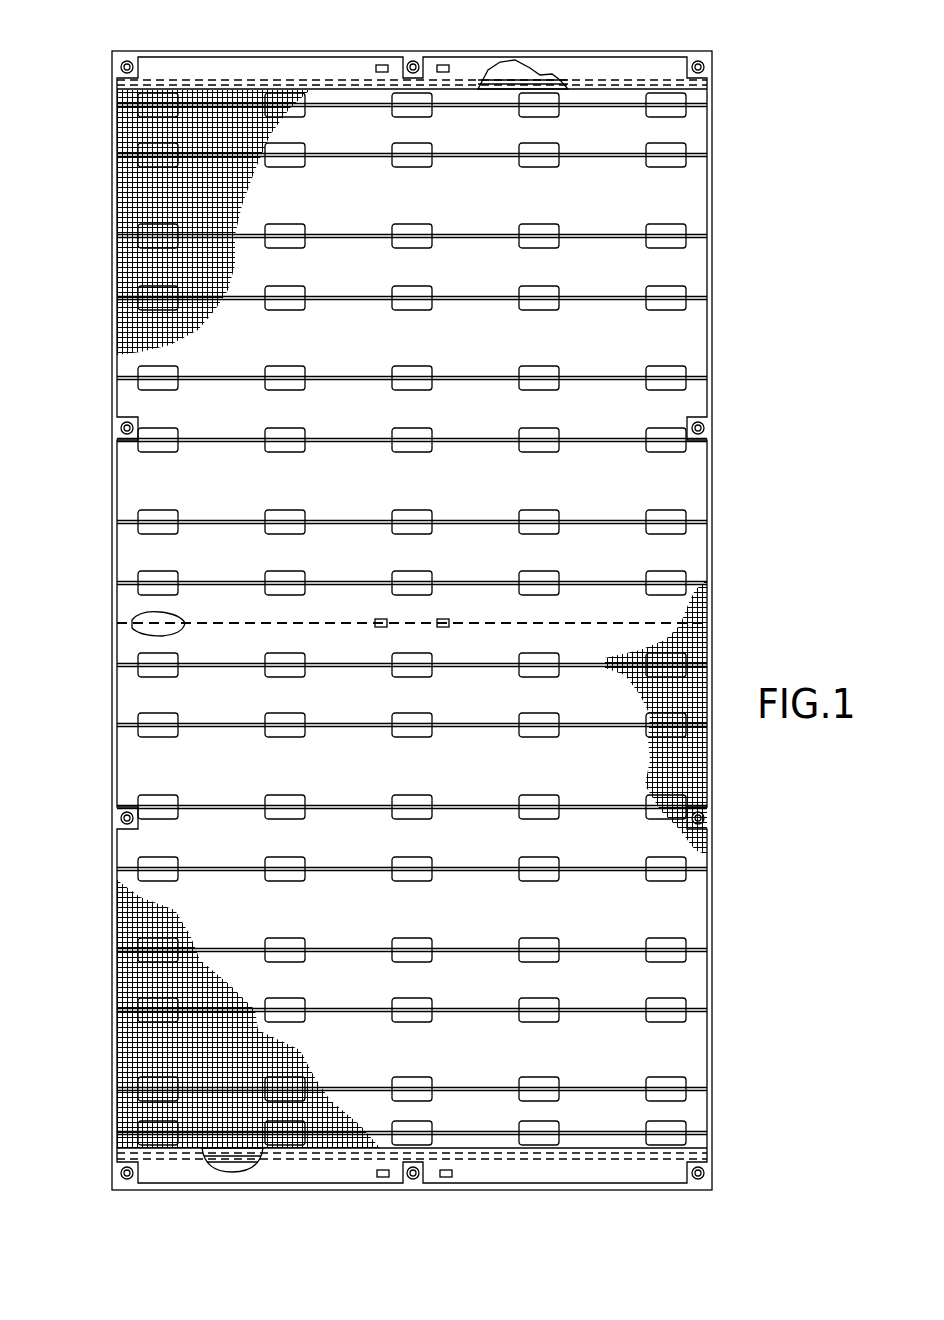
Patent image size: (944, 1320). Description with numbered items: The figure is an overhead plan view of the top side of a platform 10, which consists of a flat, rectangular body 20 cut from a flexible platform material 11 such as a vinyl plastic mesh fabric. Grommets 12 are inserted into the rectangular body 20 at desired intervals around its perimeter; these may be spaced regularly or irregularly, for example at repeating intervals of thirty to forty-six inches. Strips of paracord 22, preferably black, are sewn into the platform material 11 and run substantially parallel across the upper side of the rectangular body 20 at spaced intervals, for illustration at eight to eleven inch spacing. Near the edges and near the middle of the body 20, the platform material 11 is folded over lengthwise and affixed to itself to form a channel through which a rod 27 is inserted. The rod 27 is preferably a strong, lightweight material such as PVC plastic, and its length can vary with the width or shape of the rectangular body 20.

The platform 10 is at (784, 304).
The platform material 11 is at (140, 200).
The grommet 12 is at (121, 67).
The rectangular body 20 is at (112, 306).
The strips of paracord 22 is at (135, 150).
The rod 27 is at (140, 618).